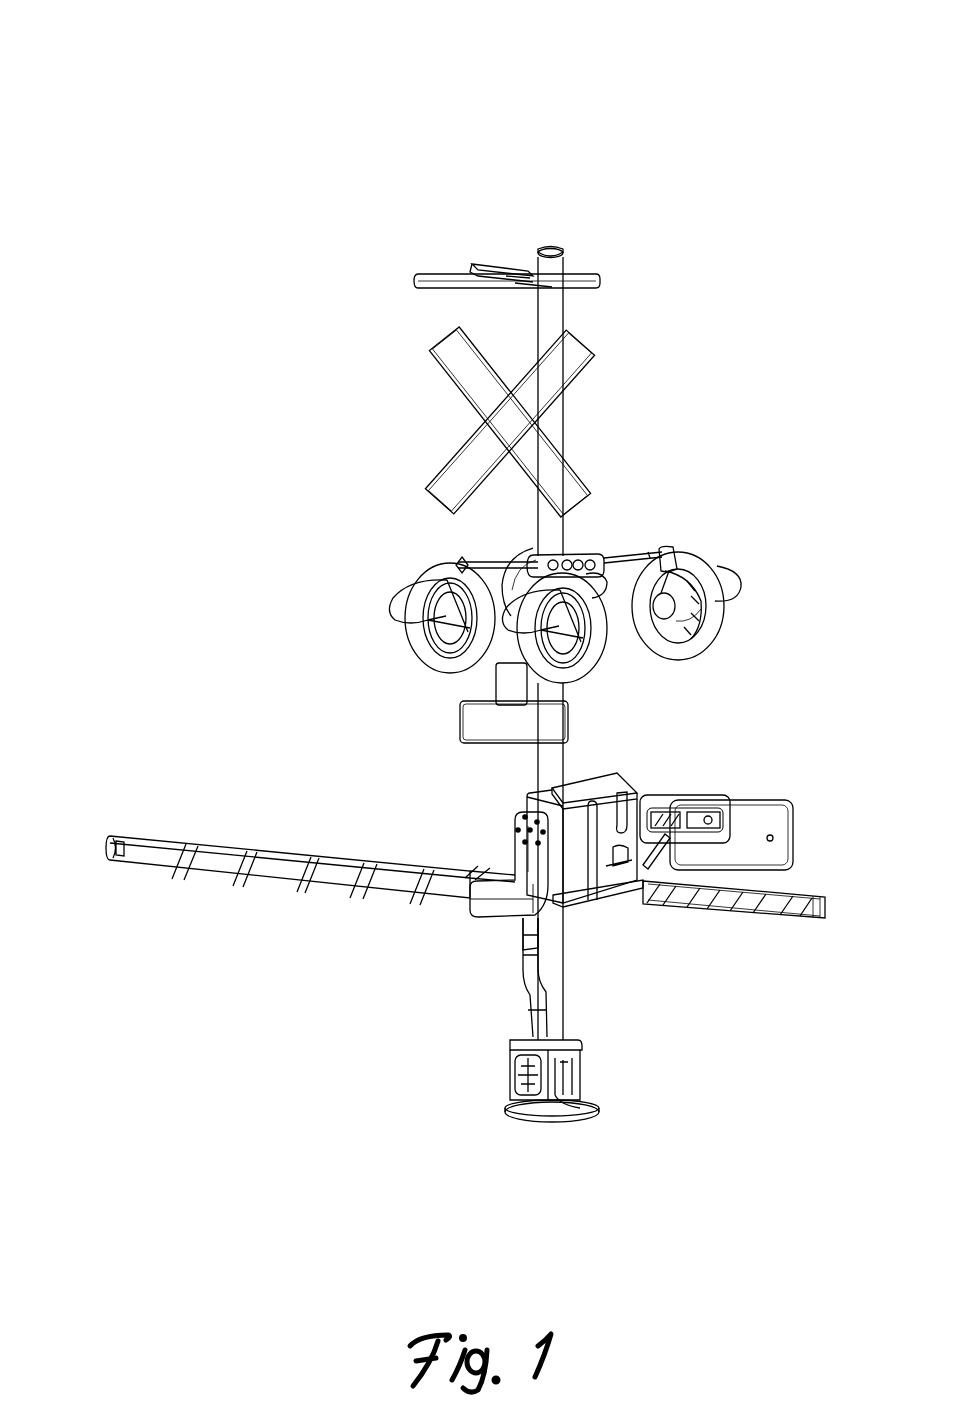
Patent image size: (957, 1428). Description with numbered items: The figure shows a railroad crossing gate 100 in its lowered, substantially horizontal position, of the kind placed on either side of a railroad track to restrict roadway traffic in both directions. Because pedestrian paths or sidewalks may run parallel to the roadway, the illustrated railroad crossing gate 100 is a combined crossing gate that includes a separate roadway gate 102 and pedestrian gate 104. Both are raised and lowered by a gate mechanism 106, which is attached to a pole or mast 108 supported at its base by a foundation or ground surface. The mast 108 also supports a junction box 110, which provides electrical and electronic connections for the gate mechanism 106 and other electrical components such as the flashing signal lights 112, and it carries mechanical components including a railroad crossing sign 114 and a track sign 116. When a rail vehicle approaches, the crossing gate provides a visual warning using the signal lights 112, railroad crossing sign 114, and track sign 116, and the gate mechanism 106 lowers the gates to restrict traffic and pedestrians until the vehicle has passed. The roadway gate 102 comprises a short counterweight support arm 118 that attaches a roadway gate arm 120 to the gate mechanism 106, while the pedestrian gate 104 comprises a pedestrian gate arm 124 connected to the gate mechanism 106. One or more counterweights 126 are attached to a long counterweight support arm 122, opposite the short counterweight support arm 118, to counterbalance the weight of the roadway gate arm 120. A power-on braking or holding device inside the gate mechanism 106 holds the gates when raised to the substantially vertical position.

The railroad crossing gate 100 is at (146, 78).
The roadway gate 102 is at (288, 924).
The pedestrian gate 104 is at (770, 957).
The gate mechanism 106 is at (597, 781).
The mast 108 is at (562, 246).
The junction box 110 is at (511, 1083).
The signal lights 112 is at (432, 565).
The railroad crossing sign 114 is at (448, 352).
The track sign 116 is at (462, 718).
The short counterweight support arm 118 is at (502, 913).
The roadway gate arm 120 is at (296, 850).
The long counterweight support arm 122 is at (660, 800).
The pedestrian gate arm 124 is at (810, 928).
The counterweight 126 is at (770, 810).